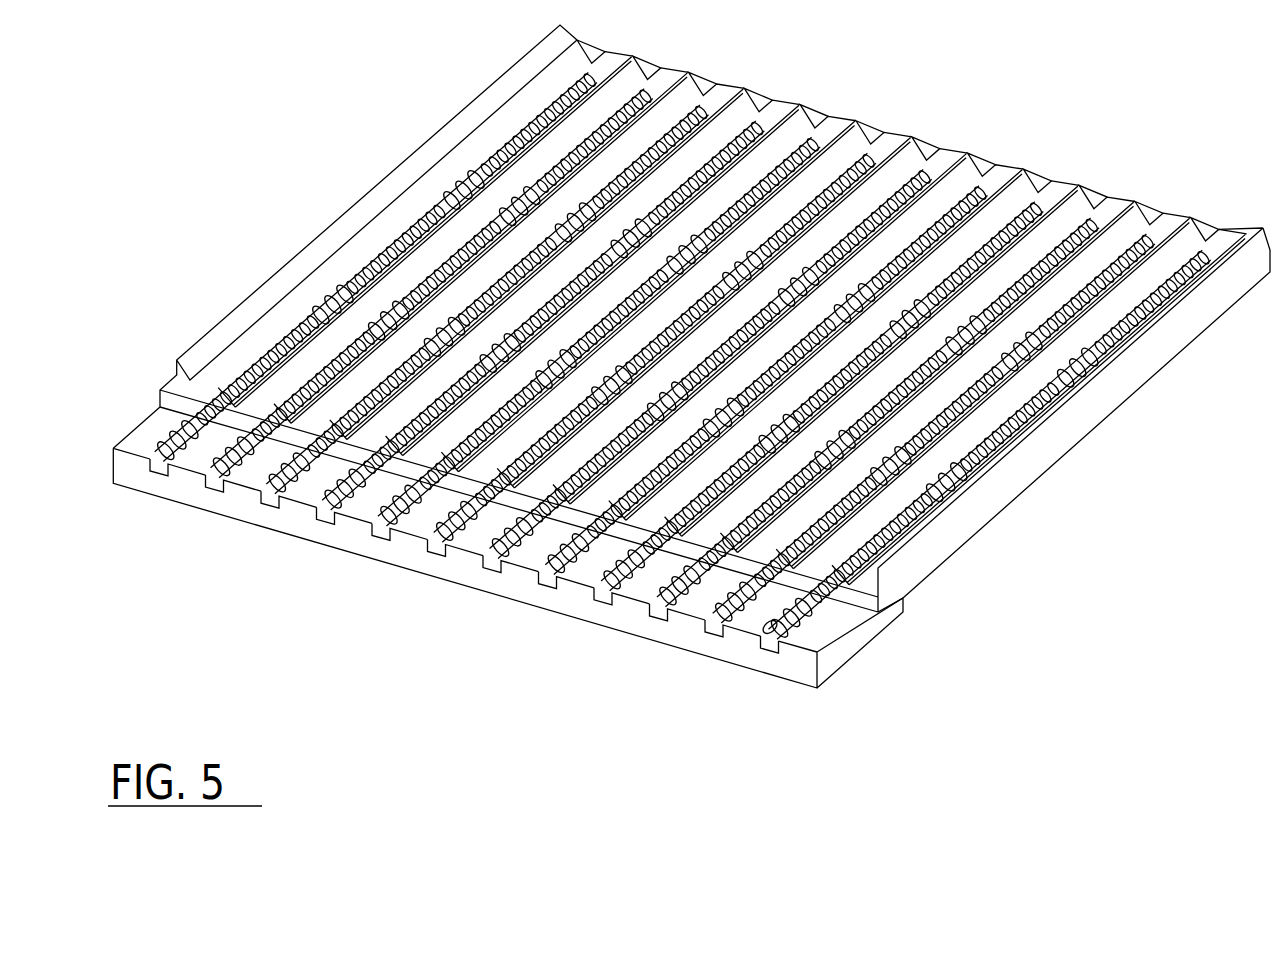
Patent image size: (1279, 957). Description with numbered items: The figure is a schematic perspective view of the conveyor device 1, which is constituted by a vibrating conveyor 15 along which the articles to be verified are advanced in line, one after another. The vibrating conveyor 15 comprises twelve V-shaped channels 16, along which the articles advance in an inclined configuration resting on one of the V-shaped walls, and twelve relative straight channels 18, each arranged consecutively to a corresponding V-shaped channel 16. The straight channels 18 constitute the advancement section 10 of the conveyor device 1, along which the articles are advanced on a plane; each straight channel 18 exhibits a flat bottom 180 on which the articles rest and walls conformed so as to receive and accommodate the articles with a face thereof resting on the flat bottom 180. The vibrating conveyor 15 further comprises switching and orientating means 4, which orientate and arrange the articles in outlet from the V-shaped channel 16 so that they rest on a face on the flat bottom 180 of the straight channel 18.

The conveyor device 1 is at (693, 420).
The advancement section 10 is at (691, 487).
The vibrating conveyor 15 is at (1074, 430).
The V-shaped channel 16 is at (1167, 268).
The switching and orientating means 4 is at (850, 591).
The straight channel 18 is at (781, 620).
The flat bottom 180 is at (805, 574).